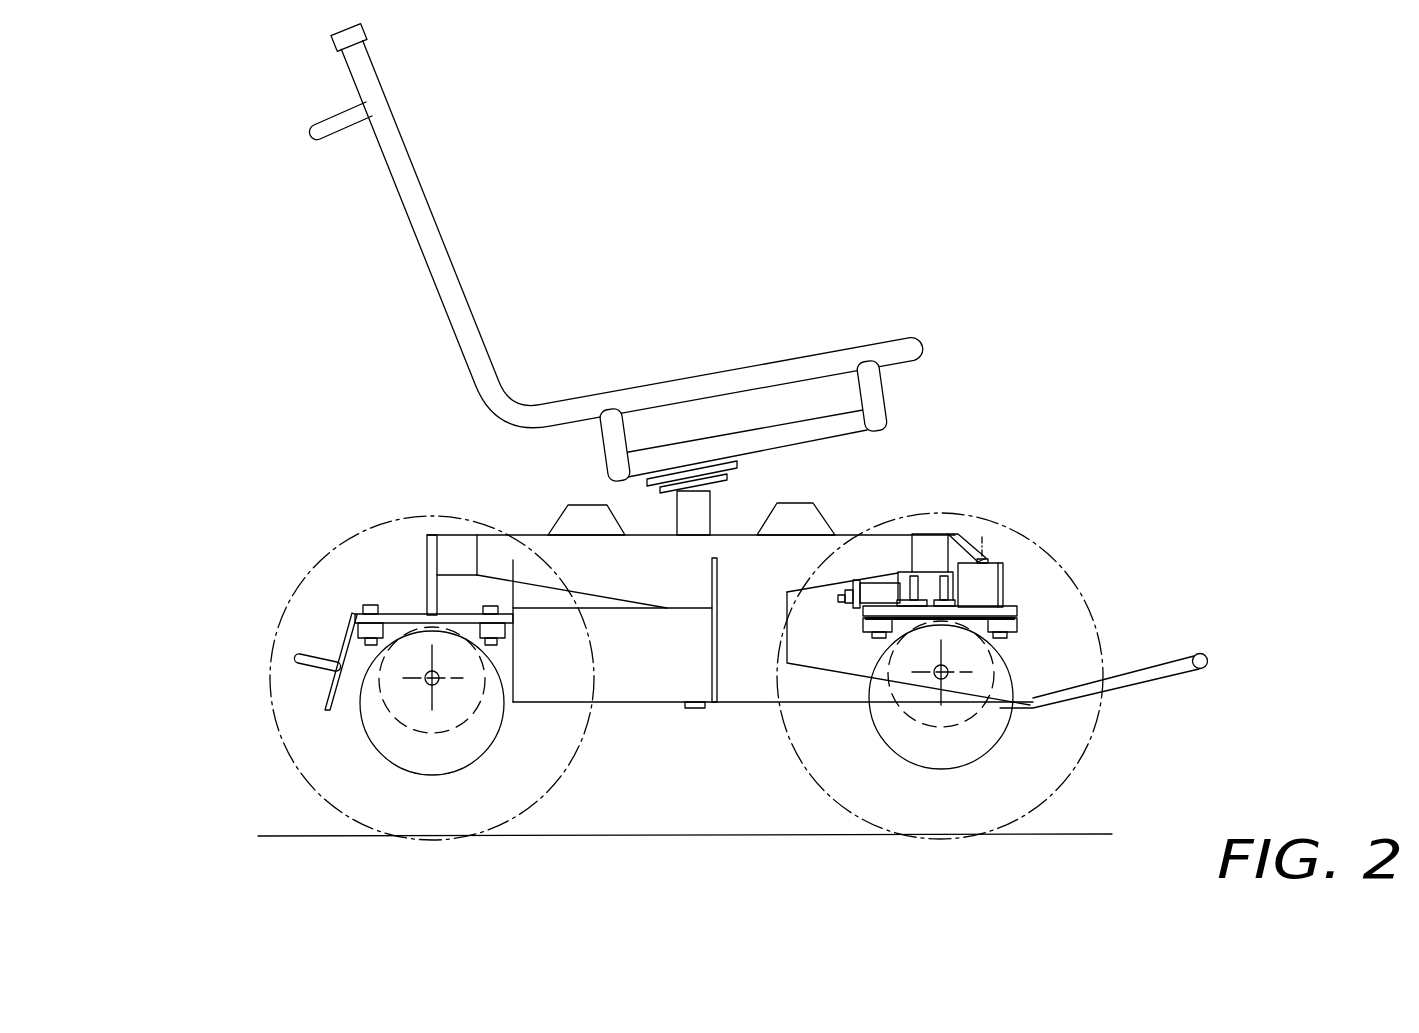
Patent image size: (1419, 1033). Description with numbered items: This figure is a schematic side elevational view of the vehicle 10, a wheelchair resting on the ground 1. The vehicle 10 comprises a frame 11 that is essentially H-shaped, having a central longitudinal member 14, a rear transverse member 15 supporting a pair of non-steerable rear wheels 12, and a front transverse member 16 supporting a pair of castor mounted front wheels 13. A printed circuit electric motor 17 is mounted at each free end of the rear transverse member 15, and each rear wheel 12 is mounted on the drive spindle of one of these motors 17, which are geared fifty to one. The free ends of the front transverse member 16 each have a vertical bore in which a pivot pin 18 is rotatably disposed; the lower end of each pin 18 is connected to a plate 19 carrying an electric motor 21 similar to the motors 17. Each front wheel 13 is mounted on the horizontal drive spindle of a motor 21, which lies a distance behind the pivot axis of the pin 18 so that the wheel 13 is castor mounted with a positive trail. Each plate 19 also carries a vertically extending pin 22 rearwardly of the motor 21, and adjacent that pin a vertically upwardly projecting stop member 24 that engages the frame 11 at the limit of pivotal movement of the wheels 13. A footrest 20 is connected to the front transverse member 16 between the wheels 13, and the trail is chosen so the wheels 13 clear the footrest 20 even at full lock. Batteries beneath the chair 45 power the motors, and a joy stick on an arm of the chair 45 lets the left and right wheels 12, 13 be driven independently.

The ground 1 is at (338, 836).
The vehicle 10 is at (1064, 217).
The frame 11 is at (488, 487).
The rear wheels 12 is at (278, 733).
The front wheels 13 is at (1067, 768).
The central longitudinal member 14 is at (733, 563).
The rear transverse member 15 is at (425, 574).
The front transverse member 16 is at (958, 536).
The printed circuit electric motor 17 is at (467, 750).
The pivot pin 18 is at (983, 584).
The plate 19 is at (1023, 612).
The footrest 20 is at (1170, 676).
The electric motor 21 is at (888, 748).
The vertically extending pin 22 is at (897, 587).
The stop member 24 is at (930, 585).
The chair 45 is at (438, 245).